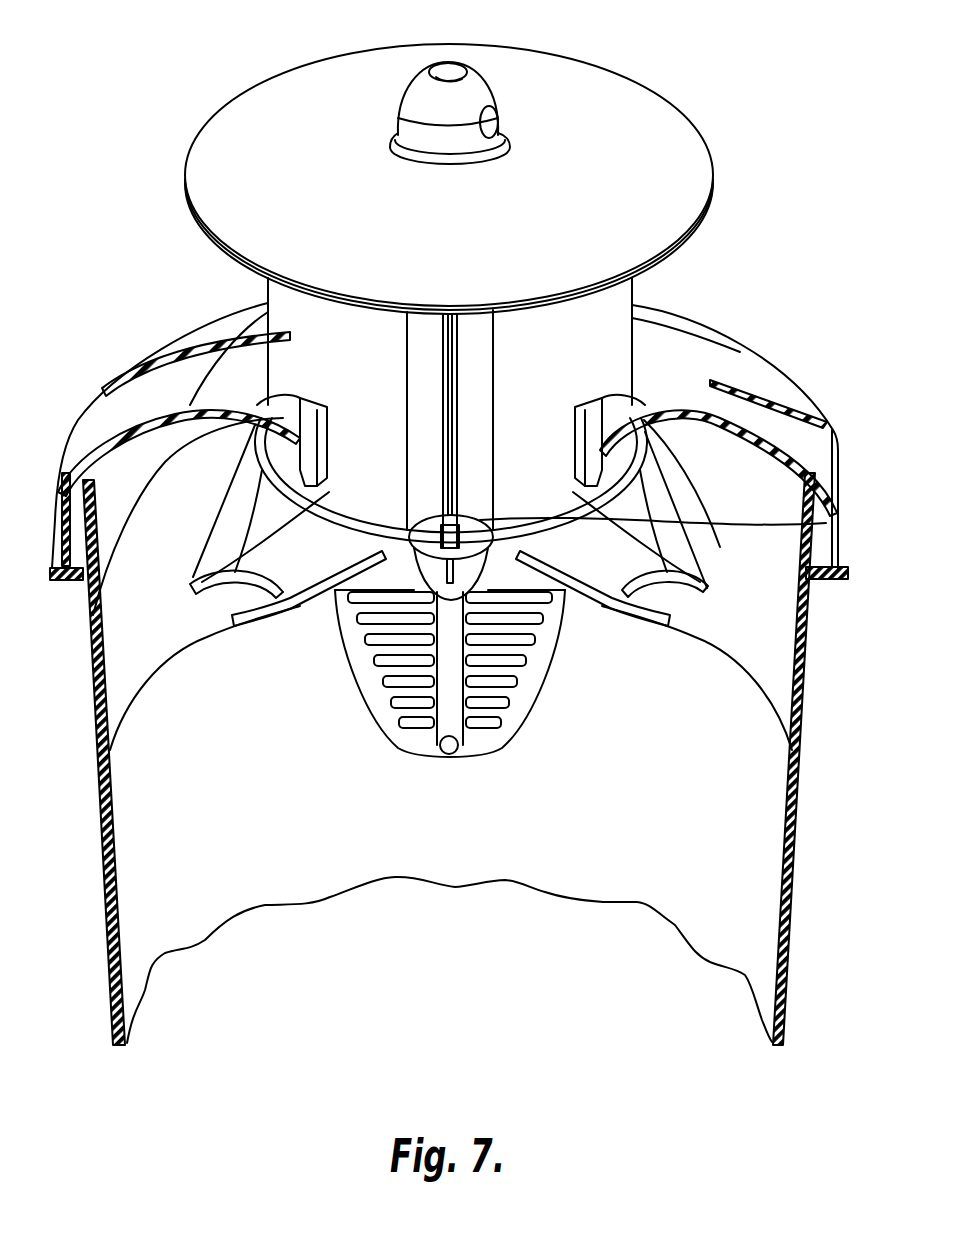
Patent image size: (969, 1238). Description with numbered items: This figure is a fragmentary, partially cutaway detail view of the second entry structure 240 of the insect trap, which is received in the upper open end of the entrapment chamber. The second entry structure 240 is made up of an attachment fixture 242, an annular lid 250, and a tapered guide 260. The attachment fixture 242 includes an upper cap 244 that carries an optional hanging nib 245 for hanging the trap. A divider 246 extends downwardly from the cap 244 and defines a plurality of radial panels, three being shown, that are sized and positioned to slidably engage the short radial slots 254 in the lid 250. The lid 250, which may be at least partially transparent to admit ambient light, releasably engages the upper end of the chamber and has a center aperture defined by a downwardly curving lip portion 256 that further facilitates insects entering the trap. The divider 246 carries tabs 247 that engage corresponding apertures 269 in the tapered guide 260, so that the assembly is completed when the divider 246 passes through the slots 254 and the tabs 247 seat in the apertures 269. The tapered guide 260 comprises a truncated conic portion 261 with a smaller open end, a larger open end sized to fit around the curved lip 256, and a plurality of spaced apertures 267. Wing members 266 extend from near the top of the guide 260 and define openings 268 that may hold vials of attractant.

The second entry structure 240 is at (748, 333).
The attachment fixture 242 is at (690, 109).
The upper cap 244 is at (567, 68).
The hanging nib 245 is at (410, 87).
The divider 246 is at (266, 358).
The tabs 247 is at (463, 583).
The annular lid 250 is at (793, 382).
The radial slots 254 is at (290, 323).
The downwardly curving lip portion 256 is at (255, 398).
The tapered guide 260 is at (600, 723).
The truncated conic portion 261 is at (487, 735).
The wing members 266 is at (672, 560).
The spaced apertures 267 is at (497, 707).
The openings 268 is at (637, 600).
The apertures 269 is at (826, 523).